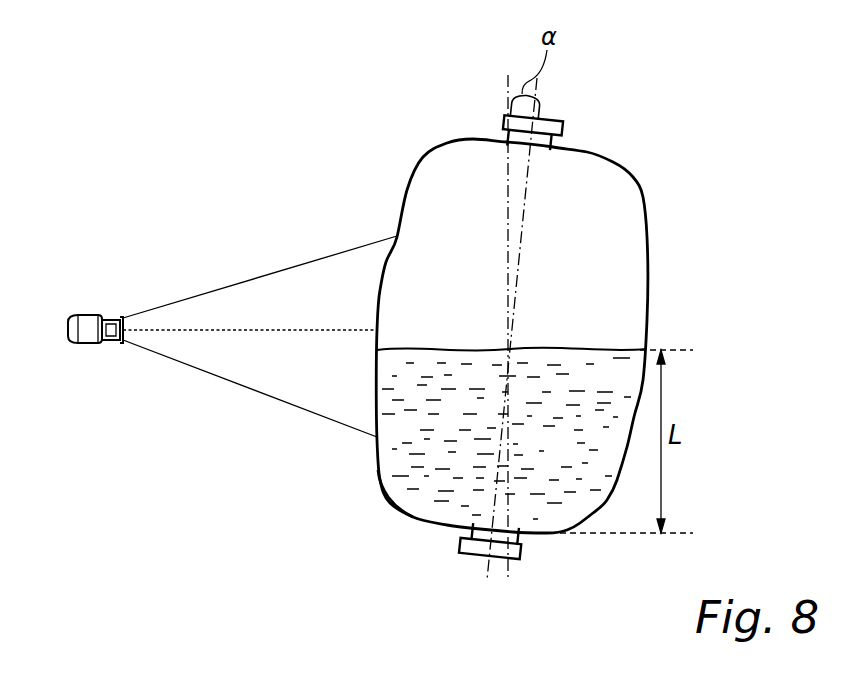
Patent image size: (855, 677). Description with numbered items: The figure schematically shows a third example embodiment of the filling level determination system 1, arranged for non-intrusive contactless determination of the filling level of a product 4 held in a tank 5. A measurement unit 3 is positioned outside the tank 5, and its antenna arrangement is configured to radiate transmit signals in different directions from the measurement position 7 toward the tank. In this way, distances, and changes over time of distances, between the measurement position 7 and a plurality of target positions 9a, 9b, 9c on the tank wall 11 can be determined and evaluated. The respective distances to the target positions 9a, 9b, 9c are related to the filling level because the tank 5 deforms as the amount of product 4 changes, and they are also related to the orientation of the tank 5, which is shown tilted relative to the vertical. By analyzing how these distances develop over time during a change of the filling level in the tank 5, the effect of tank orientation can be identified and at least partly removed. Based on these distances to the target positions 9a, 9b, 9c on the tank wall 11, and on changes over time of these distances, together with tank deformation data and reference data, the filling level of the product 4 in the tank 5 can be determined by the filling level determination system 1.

The filling level determination system 1 is at (74, 321).
The measurement unit 3 is at (86, 334).
The measurement position 7 is at (110, 337).
The tank 5 is at (638, 152).
The product 4 is at (511, 433).
The target position 9a is at (397, 235).
The target position 9b is at (377, 331).
The target position 9c is at (377, 437).
The tank wall 11 is at (396, 497).